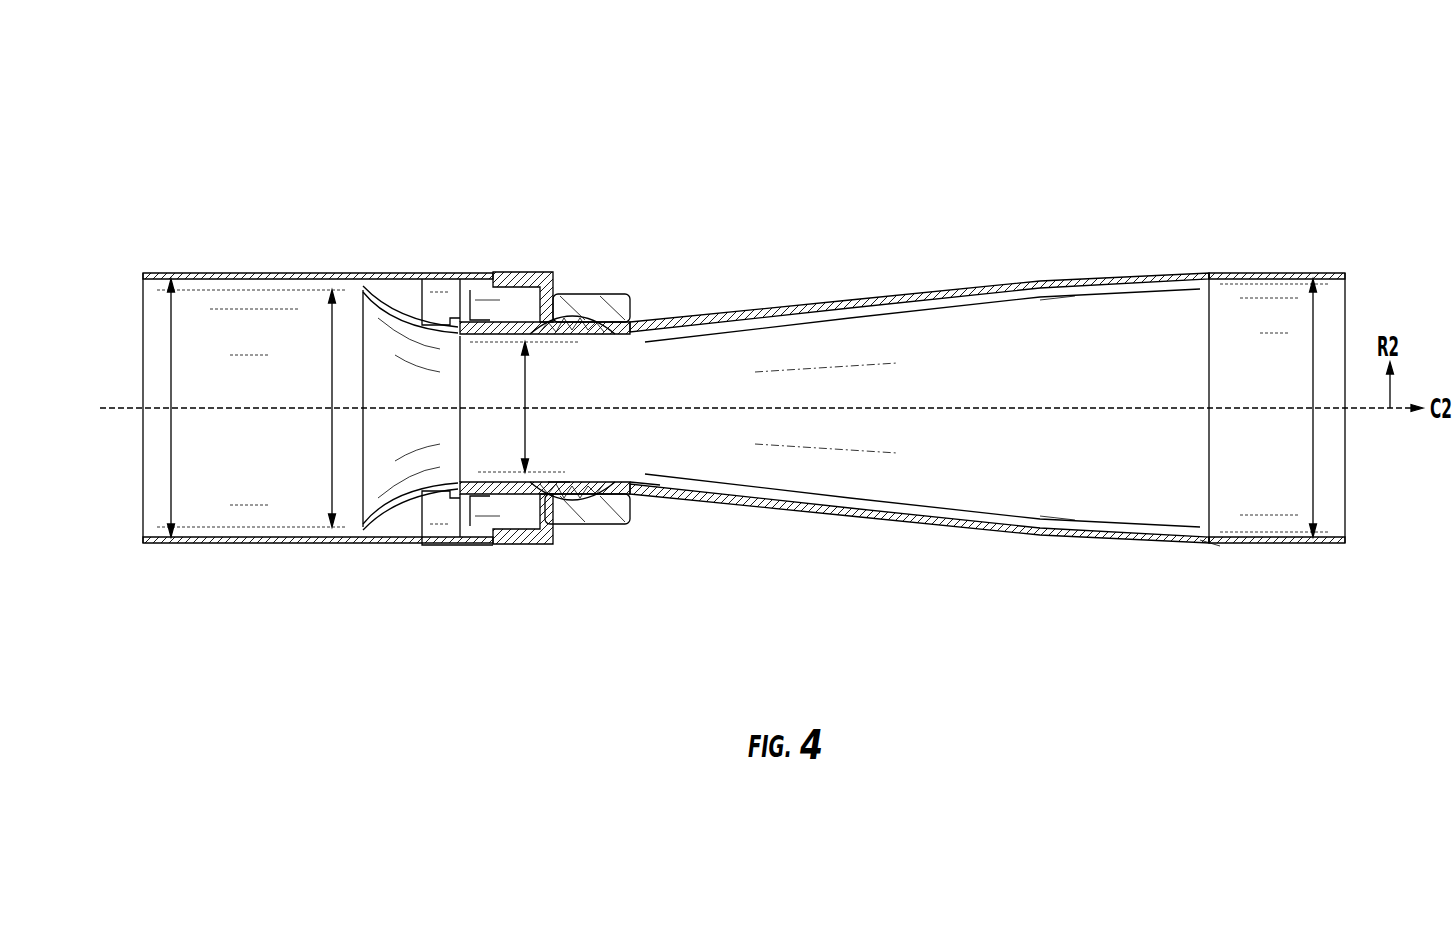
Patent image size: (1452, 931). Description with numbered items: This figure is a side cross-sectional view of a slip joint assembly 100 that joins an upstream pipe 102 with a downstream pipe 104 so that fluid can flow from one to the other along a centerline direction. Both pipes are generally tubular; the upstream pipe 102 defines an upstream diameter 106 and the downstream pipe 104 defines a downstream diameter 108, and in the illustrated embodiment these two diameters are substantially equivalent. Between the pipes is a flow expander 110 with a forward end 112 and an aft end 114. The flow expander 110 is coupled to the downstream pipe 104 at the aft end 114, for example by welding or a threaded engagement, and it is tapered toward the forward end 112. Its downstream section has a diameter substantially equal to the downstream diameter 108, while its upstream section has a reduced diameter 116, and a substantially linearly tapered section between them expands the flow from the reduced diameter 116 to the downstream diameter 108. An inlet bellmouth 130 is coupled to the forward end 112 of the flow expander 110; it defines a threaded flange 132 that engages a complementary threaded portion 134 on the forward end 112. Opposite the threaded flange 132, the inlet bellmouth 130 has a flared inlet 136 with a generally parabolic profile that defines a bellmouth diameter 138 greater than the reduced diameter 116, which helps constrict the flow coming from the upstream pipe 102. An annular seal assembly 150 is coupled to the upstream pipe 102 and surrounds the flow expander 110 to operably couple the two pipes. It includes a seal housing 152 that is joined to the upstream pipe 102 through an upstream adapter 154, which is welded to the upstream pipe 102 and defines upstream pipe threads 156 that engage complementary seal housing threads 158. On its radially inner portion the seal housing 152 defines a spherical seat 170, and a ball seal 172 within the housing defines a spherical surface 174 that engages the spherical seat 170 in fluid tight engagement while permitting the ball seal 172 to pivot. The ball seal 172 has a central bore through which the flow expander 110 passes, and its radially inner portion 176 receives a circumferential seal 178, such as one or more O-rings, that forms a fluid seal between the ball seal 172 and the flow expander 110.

The slip joint assembly 100 is at (744, 169).
The upstream pipe 102 is at (250, 272).
The downstream pipe 104 is at (1258, 272).
The upstream diameter 106 is at (173, 378).
The downstream diameter 108 is at (1313, 347).
The flow expander 110 is at (927, 287).
The forward end 112 is at (453, 490).
The aft end 114 is at (1212, 552).
The reduced diameter 116 is at (527, 396).
The inlet bellmouth 130 is at (404, 306).
The threaded flange 132 is at (465, 346).
The threaded portion 134 is at (487, 306).
The flared inlet 136 is at (375, 292).
The bellmouth diameter 138 is at (332, 428).
The annular seal assembly 150 is at (660, 225).
The seal housing 152 is at (556, 270).
The upstream adapter 154 is at (480, 300).
The upstream pipe threads 156 is at (541, 527).
The seal housing threads 158 is at (509, 556).
The spherical seat 170 is at (603, 337).
The ball seal 172 is at (640, 470).
The spherical surface 174 is at (586, 295).
The radially inner portion 176 is at (558, 470).
The circumferential seal 178 is at (585, 490).